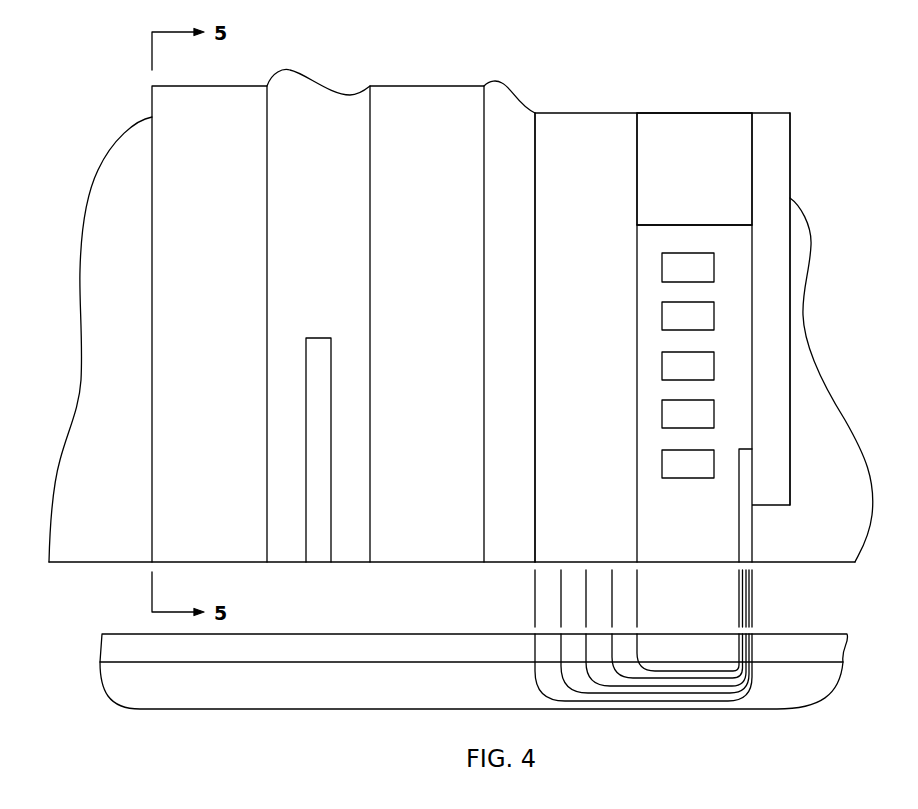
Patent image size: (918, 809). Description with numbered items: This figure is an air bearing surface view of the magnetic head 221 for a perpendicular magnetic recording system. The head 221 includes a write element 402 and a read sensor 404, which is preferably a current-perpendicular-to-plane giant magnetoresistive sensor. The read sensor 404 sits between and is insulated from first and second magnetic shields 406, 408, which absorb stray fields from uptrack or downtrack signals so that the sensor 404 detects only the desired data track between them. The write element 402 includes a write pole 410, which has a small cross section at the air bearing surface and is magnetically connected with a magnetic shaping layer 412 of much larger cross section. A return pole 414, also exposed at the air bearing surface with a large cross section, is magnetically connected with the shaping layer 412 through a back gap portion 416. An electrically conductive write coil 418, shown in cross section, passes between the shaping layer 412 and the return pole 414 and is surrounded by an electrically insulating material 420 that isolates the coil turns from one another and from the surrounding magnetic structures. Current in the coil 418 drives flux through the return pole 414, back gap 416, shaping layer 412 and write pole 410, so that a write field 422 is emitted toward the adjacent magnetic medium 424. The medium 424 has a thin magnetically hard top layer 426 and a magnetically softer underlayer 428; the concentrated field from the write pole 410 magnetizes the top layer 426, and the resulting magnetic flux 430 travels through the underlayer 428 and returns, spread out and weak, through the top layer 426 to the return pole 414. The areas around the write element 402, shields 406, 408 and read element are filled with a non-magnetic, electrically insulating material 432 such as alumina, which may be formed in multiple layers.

The magnetic head 221 is at (640, 63).
The write element 402 is at (549, 95).
The read sensor 404 is at (319, 549).
The first magnetic shield 406 is at (407, 327).
The second magnetic shield 408 is at (192, 326).
The write pole 410 is at (746, 538).
The magnetic shaping layer 412 is at (768, 446).
The return pole 414 is at (557, 298).
The back gap portion 416 is at (668, 164).
The write coil 418 is at (688, 265).
The electrically insulating material 420 is at (660, 530).
The write field 422 is at (755, 596).
The magnetic medium 424 is at (368, 623).
The magnetically hard top layer 426 is at (387, 647).
The magnetically soft underlayer 428 is at (307, 685).
The magnetic flux 430 is at (745, 690).
The non-magnetic electrically insulating material 432 is at (113, 157).